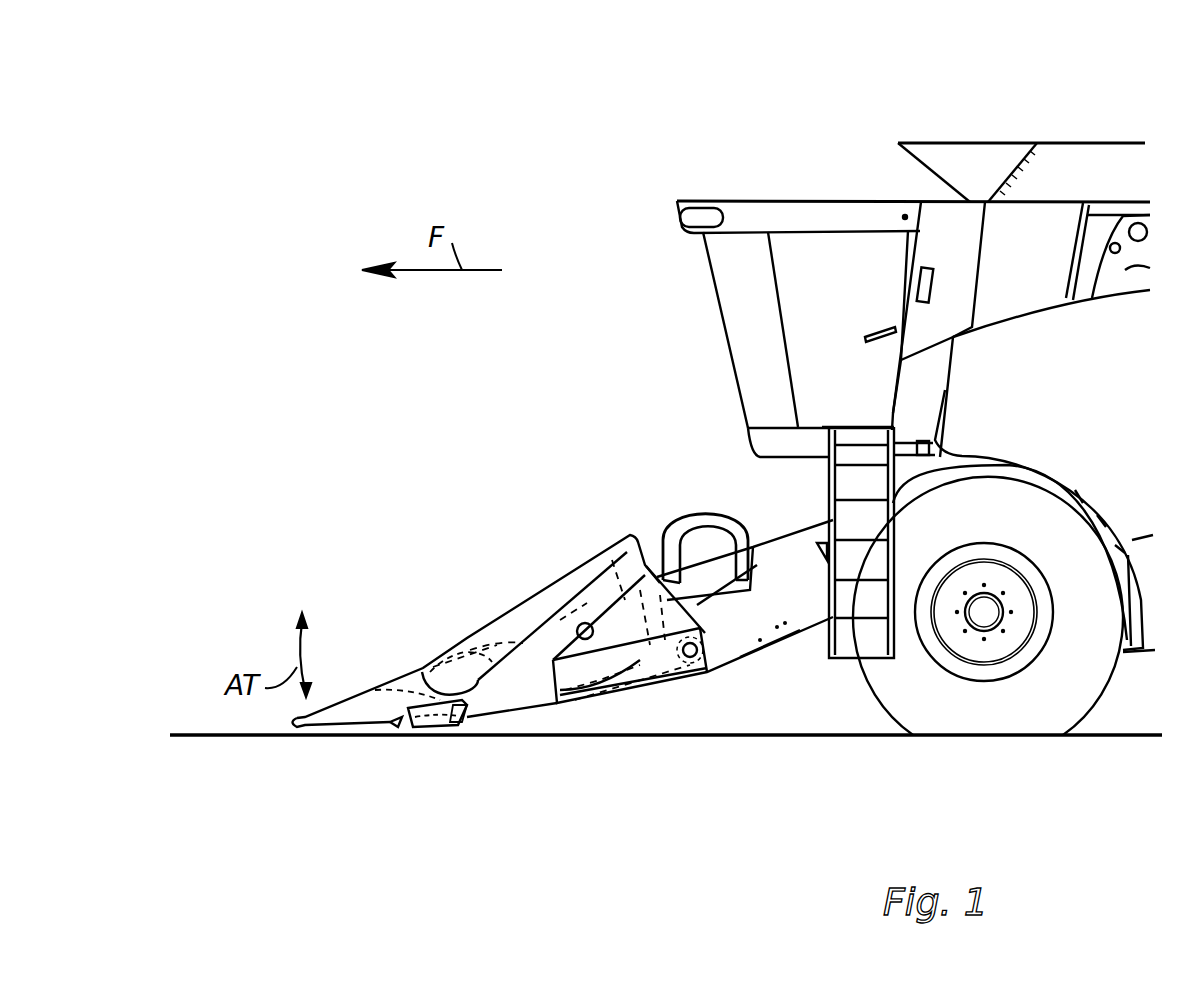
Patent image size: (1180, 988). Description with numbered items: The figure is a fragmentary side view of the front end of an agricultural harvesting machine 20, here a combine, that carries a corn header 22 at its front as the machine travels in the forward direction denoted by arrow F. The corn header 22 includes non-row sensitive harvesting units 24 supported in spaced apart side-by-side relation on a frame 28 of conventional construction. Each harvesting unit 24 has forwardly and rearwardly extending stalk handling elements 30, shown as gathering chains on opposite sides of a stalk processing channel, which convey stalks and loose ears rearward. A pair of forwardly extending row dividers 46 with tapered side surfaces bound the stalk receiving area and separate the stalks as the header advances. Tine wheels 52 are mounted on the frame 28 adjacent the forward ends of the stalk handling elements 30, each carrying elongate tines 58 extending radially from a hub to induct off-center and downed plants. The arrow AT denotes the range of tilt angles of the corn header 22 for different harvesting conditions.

The harvesting machine 20 is at (1067, 142).
The corn header 22 is at (553, 645).
The harvesting units 24 is at (612, 740).
The stalk handling elements 30 is at (633, 677).
The frame 28 is at (453, 726).
The row dividers 46 is at (477, 627).
The tine wheels 52 is at (370, 759).
The tines 58 is at (393, 726).